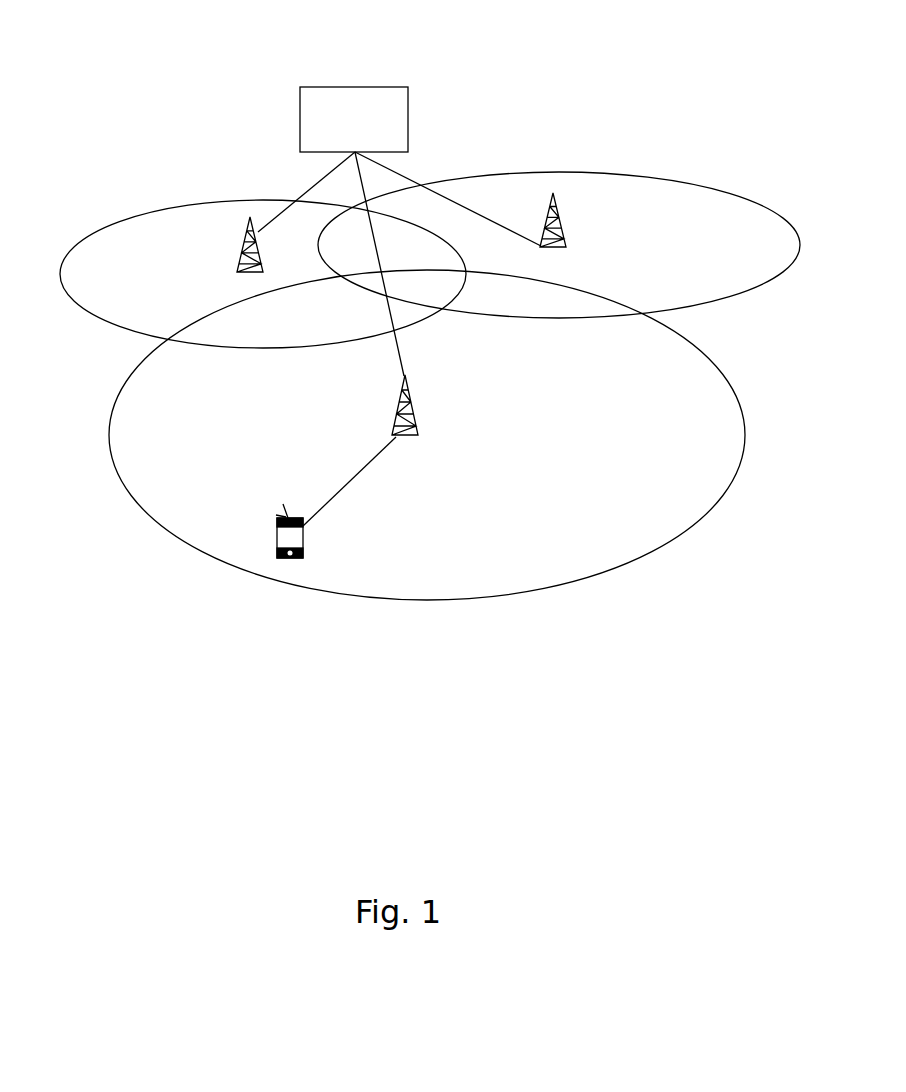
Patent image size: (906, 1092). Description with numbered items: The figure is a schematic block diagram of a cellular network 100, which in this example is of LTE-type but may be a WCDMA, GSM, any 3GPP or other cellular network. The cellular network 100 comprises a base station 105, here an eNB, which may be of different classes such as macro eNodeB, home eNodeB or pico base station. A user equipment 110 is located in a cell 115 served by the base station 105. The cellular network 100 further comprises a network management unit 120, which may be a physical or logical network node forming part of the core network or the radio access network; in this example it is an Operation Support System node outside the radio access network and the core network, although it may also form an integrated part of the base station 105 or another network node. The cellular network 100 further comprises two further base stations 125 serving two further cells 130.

The cellular network 100 is at (176, 103).
The base station 105 is at (420, 400).
The user equipment 110 is at (265, 540).
The cell 115 is at (395, 575).
The network management unit 120 is at (320, 95).
The further base stations 125 is at (235, 225).
The further cells 130 is at (90, 273).